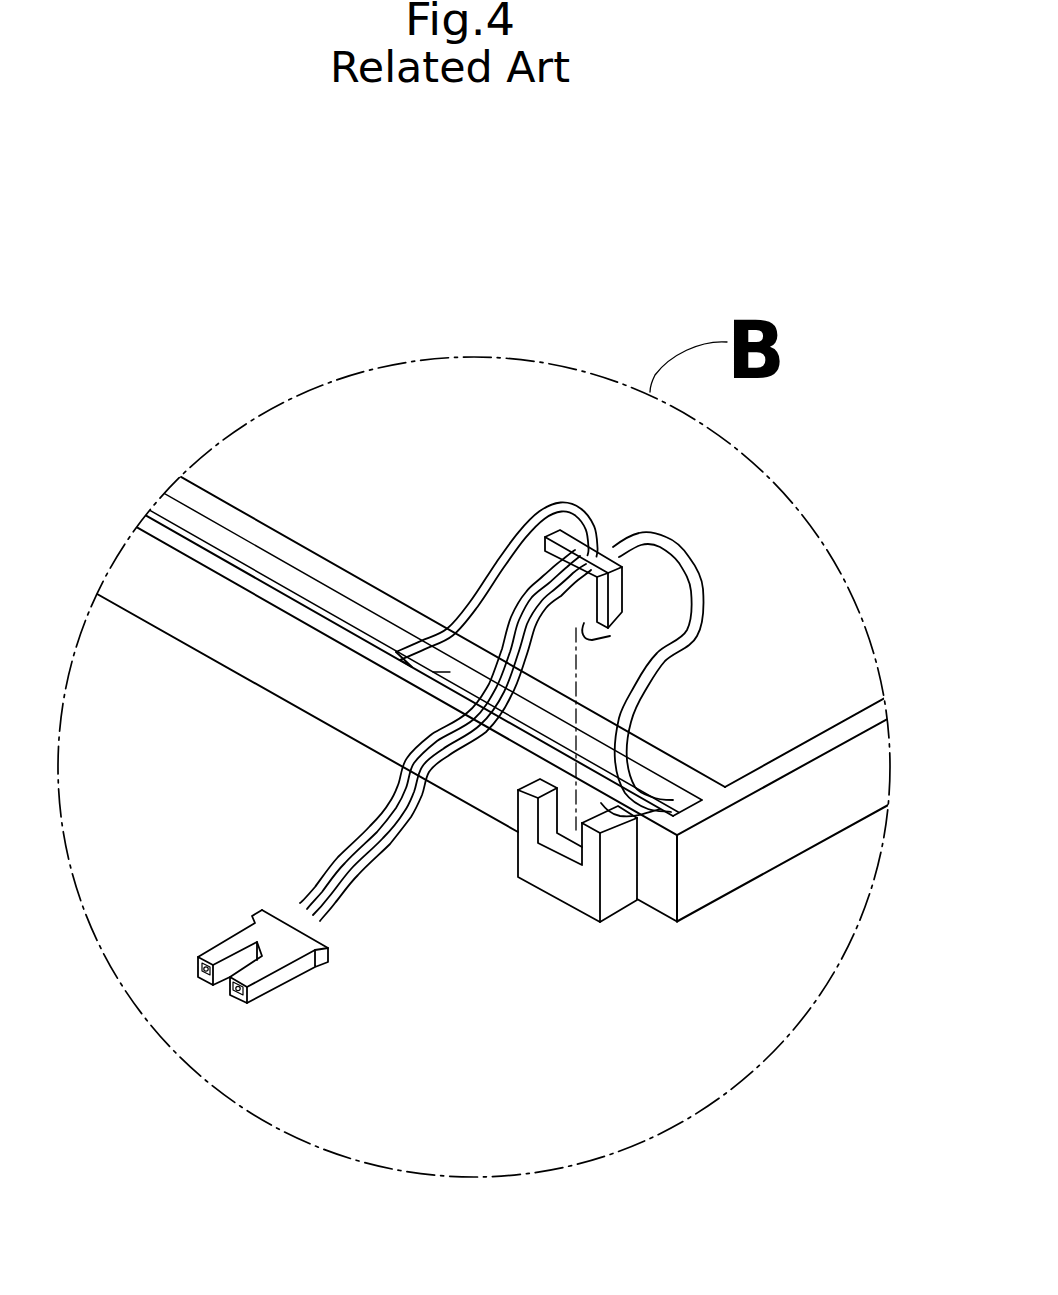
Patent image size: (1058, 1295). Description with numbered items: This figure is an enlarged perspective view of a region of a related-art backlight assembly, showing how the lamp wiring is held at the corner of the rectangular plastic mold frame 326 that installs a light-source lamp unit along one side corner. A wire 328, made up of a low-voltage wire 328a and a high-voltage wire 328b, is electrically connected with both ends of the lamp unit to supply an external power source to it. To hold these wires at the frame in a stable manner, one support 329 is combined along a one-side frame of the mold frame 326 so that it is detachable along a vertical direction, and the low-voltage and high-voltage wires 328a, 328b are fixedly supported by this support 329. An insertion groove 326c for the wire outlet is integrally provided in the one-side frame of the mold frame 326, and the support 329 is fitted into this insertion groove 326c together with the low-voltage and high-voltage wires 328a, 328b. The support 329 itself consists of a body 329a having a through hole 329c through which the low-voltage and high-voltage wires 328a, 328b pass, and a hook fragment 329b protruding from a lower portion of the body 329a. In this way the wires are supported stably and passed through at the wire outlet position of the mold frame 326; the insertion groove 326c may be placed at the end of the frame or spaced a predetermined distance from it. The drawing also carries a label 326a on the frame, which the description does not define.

The mold frame 326 is at (237, 648).
The wire receiving groove 326a is at (433, 670).
The insertion groove 326c is at (613, 809).
The wire 328 is at (188, 775).
The low-voltage wire 328a is at (338, 878).
The high-voltage wire 328b is at (397, 848).
The support 329 is at (733, 447).
The body 329a is at (592, 556).
The hook fragment 329b is at (588, 634).
The through hole 329c is at (563, 548).